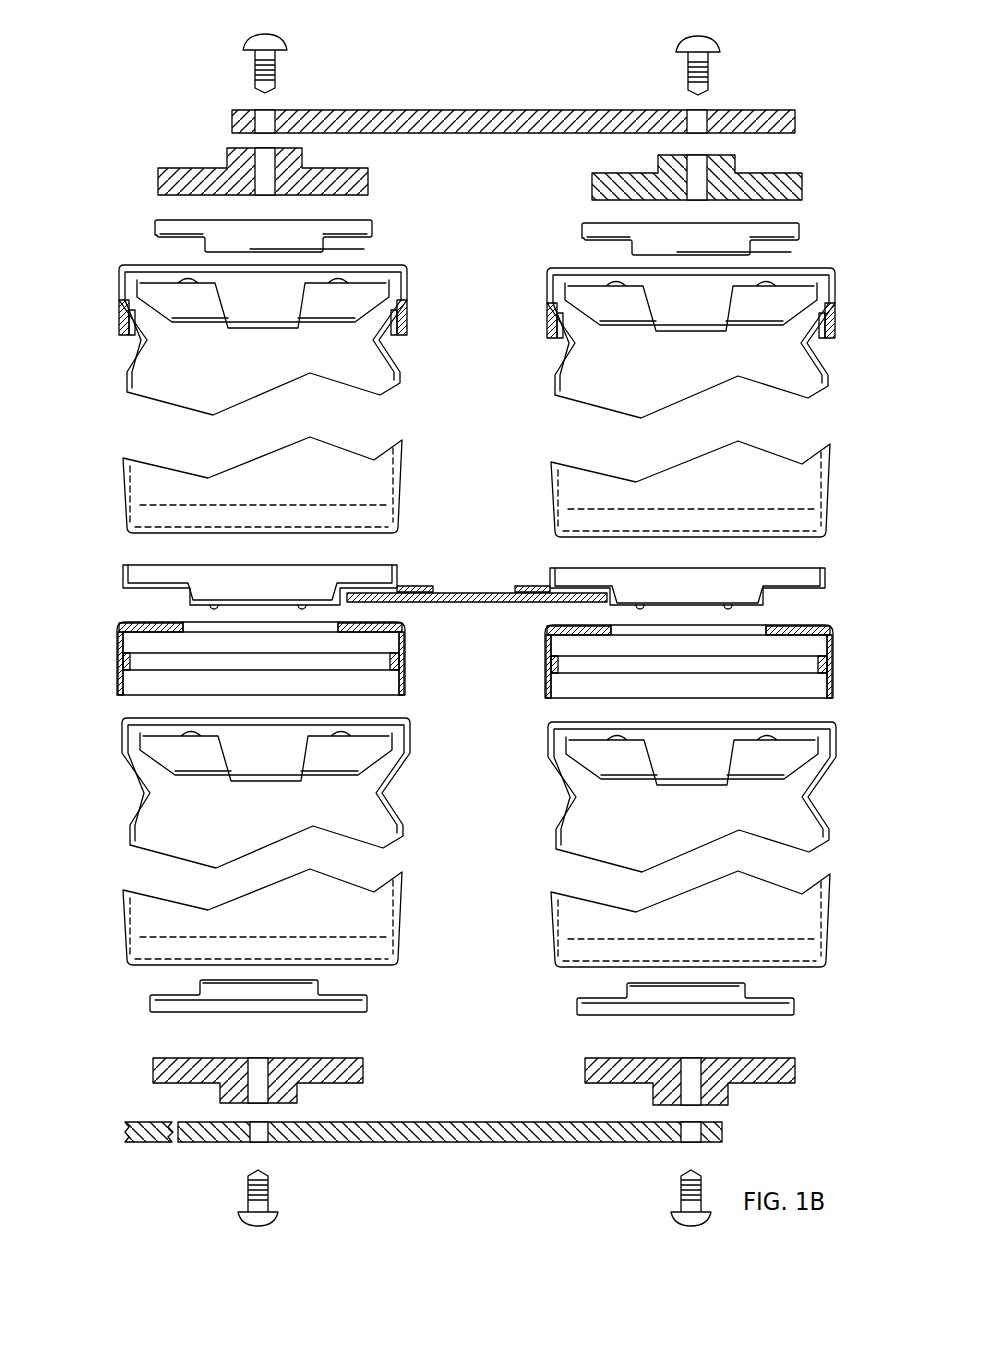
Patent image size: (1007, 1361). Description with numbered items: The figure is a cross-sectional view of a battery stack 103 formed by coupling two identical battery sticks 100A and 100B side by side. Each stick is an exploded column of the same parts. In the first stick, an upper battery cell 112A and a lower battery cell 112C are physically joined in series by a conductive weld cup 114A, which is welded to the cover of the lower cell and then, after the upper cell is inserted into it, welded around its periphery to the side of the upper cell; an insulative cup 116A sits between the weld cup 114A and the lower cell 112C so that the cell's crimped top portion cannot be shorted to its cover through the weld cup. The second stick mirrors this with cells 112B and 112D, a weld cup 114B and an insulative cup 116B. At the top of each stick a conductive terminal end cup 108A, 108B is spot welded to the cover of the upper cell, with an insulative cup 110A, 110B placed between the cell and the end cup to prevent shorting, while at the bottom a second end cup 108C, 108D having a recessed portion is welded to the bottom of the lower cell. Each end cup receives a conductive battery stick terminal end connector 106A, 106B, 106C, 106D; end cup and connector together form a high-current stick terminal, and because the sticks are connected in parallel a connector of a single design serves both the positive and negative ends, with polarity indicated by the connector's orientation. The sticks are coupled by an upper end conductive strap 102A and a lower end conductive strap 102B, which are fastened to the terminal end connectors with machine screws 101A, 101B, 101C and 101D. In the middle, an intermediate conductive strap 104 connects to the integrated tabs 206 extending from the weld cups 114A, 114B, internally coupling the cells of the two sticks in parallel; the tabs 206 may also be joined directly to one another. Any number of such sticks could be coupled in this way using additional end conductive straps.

The battery stack 103 is at (163, 86).
The battery stick 100A is at (153, 152).
The battery stick 100B is at (815, 112).
The machine screw 101A is at (248, 44).
The machine screw 101B is at (712, 46).
The machine screw 101C is at (272, 1222).
The machine screw 101D is at (668, 1224).
The end conductive strap 102A is at (460, 110).
The end conductive strap 102B is at (450, 1122).
The intermediate conductive strap 104 is at (470, 593).
The terminal end connector 106A is at (203, 168).
The terminal end connector 106B is at (768, 182).
The terminal end connector 106C is at (153, 1070).
The terminal end connector 106D is at (792, 1070).
The terminal end cup 108A is at (158, 224).
The terminal end cup 108B is at (798, 232).
The terminal end cup 108C is at (150, 995).
The terminal end cup 108D is at (793, 1000).
The insulative cup 110A is at (119, 310).
The insulative cup 110B is at (832, 310).
The battery cell 112A is at (121, 372).
The battery cell 112B is at (826, 372).
The battery cell 112C is at (121, 805).
The battery cell 112D is at (827, 805).
The weld cup 114A is at (121, 573).
The weld cup 114B is at (826, 574).
The insulative cup 116A is at (117, 665).
The insulative cup 116B is at (830, 665).
The integrated tab 206 is at (412, 585).